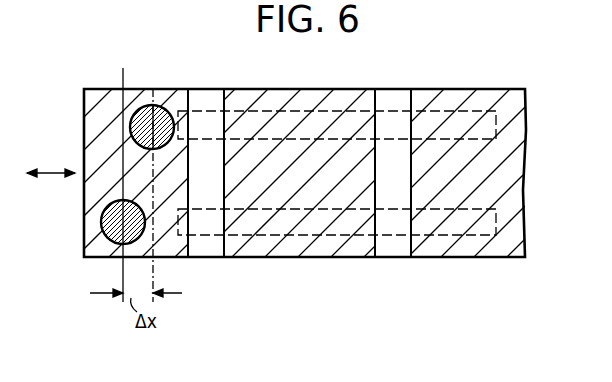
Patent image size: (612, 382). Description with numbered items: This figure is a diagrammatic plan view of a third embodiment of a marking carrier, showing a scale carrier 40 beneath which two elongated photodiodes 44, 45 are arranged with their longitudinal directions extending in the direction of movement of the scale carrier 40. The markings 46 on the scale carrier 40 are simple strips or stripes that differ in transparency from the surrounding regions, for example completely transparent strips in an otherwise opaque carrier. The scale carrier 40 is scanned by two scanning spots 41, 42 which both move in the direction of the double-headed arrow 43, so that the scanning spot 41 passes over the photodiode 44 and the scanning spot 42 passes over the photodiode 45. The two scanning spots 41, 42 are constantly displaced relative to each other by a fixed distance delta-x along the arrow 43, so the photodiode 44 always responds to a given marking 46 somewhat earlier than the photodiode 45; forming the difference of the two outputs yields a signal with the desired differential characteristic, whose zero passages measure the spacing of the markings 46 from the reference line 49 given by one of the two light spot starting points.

The scale carrier 40 is at (483, 247).
The scanning spot 41 is at (167, 109).
The scanning spot 42 is at (101, 223).
The double-headed arrow 43 is at (53, 172).
The photodiode 44 is at (312, 111).
The photodiode 45 is at (279, 238).
The markings 46 is at (207, 246).
The reference line 49 is at (121, 278).